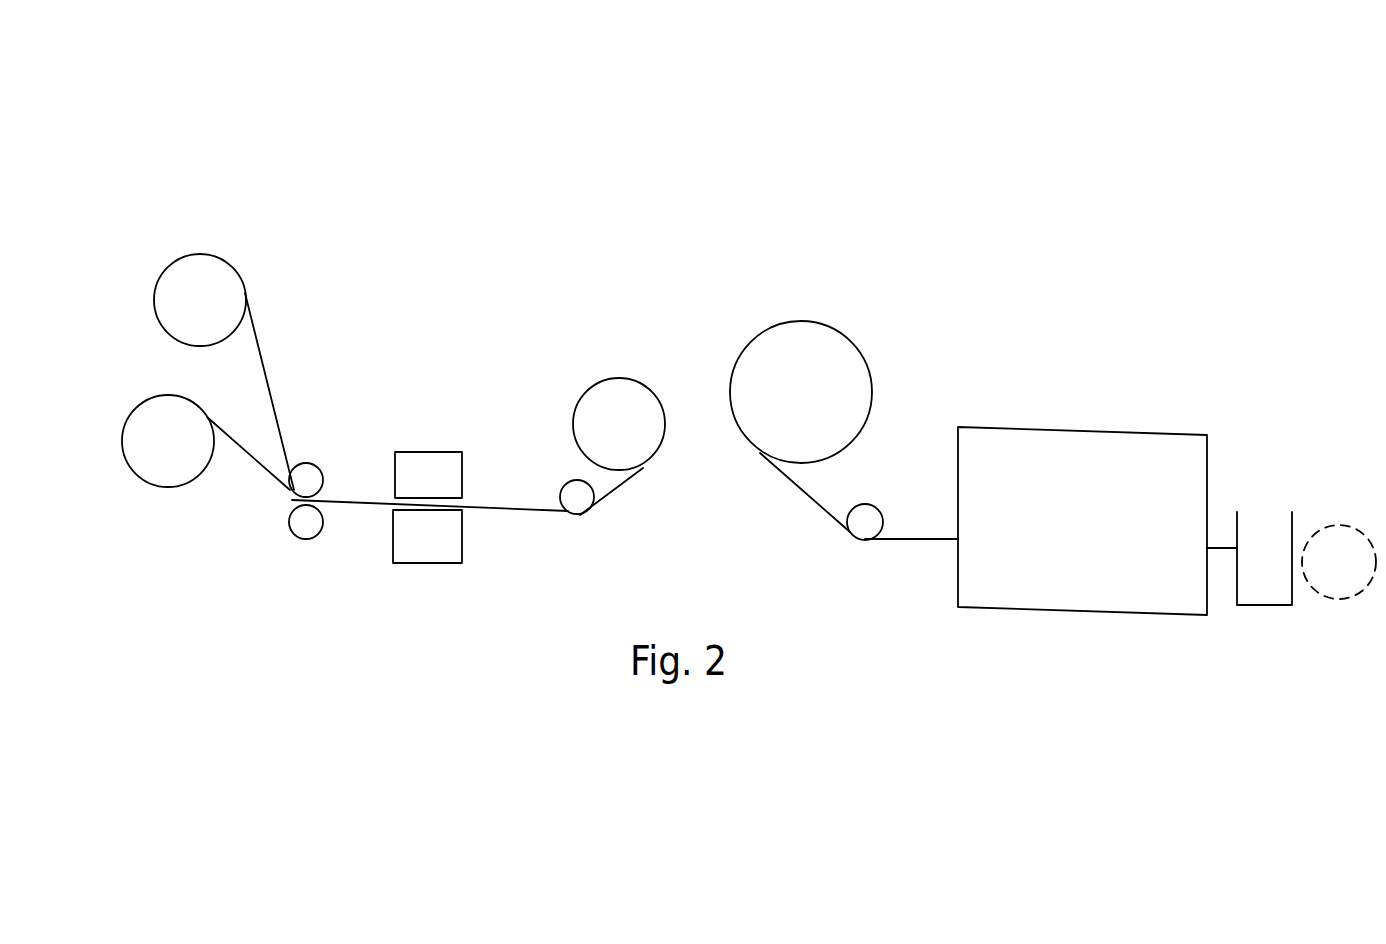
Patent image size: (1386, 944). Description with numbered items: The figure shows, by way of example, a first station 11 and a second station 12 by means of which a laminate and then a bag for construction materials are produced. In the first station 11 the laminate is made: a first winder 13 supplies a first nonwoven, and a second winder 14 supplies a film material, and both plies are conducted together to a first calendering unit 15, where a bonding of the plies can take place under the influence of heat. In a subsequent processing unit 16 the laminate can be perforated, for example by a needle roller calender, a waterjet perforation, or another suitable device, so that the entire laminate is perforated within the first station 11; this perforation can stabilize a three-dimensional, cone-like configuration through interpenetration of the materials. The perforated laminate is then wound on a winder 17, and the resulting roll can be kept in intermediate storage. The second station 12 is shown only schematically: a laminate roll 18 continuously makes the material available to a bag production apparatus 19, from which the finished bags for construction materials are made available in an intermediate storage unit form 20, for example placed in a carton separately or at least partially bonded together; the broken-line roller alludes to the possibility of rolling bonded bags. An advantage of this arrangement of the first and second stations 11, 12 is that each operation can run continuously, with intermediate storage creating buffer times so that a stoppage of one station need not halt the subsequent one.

The first station 11 is at (542, 185).
The second station 12 is at (1010, 228).
The first winder 13 is at (231, 262).
The second winder 14 is at (198, 480).
The first calendering unit 15 is at (310, 562).
The processing unit 16 is at (428, 437).
The winder 17 is at (633, 380).
The laminate roll 18 is at (818, 320).
The bag production apparatus 19 is at (1033, 427).
The intermediate storage unit 20 is at (1259, 625).